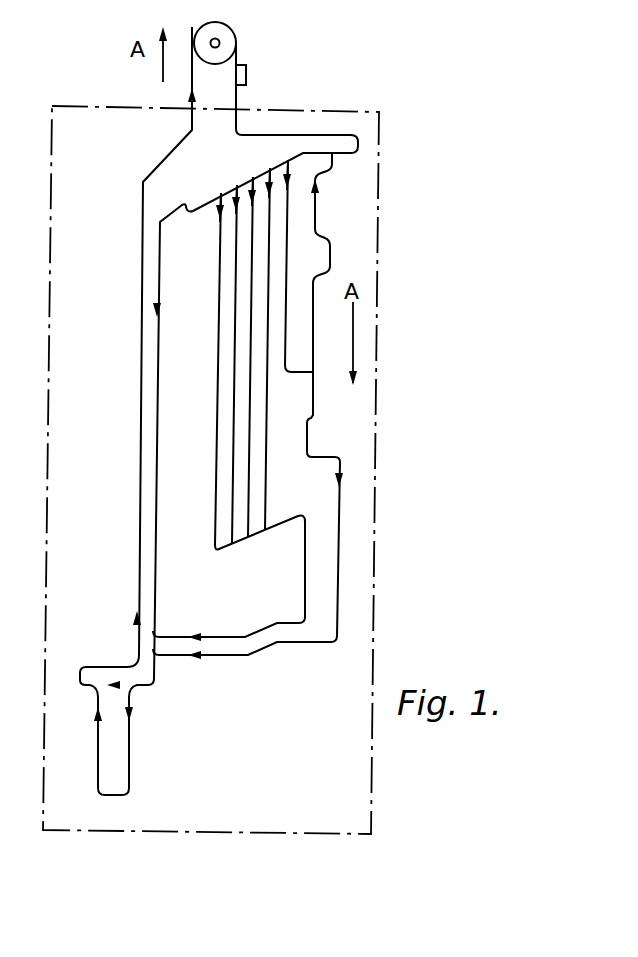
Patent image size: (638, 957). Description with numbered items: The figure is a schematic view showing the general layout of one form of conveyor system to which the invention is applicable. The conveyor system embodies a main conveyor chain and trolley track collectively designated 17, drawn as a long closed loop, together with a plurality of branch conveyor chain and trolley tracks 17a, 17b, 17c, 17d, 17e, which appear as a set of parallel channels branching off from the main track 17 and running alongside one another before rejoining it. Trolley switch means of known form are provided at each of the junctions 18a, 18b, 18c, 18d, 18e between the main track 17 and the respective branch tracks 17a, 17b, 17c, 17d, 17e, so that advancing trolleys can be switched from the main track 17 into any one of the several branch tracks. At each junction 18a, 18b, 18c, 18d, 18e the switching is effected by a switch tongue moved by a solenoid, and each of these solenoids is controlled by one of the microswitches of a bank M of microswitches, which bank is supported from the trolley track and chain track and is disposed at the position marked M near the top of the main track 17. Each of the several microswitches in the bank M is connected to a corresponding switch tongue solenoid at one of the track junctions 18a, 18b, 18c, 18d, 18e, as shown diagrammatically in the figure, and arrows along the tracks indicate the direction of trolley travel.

The main conveyor chain and trolley track 17 is at (142, 312).
The branch conveyor chain and trolley track 17a is at (219, 237).
The branch conveyor chain and trolley track 17b is at (235, 258).
The branch conveyor chain and trolley track 17c is at (251, 281).
The branch conveyor chain and trolley track 17d is at (268, 303).
The branch conveyor chain and trolley track 17e is at (285, 332).
The junction 18a is at (221, 198).
The junction 18b is at (237, 187).
The junction 18c is at (253, 179).
The junction 18d is at (270, 170).
The junction 18e is at (288, 162).
The bank of microswitches M is at (248, 72).